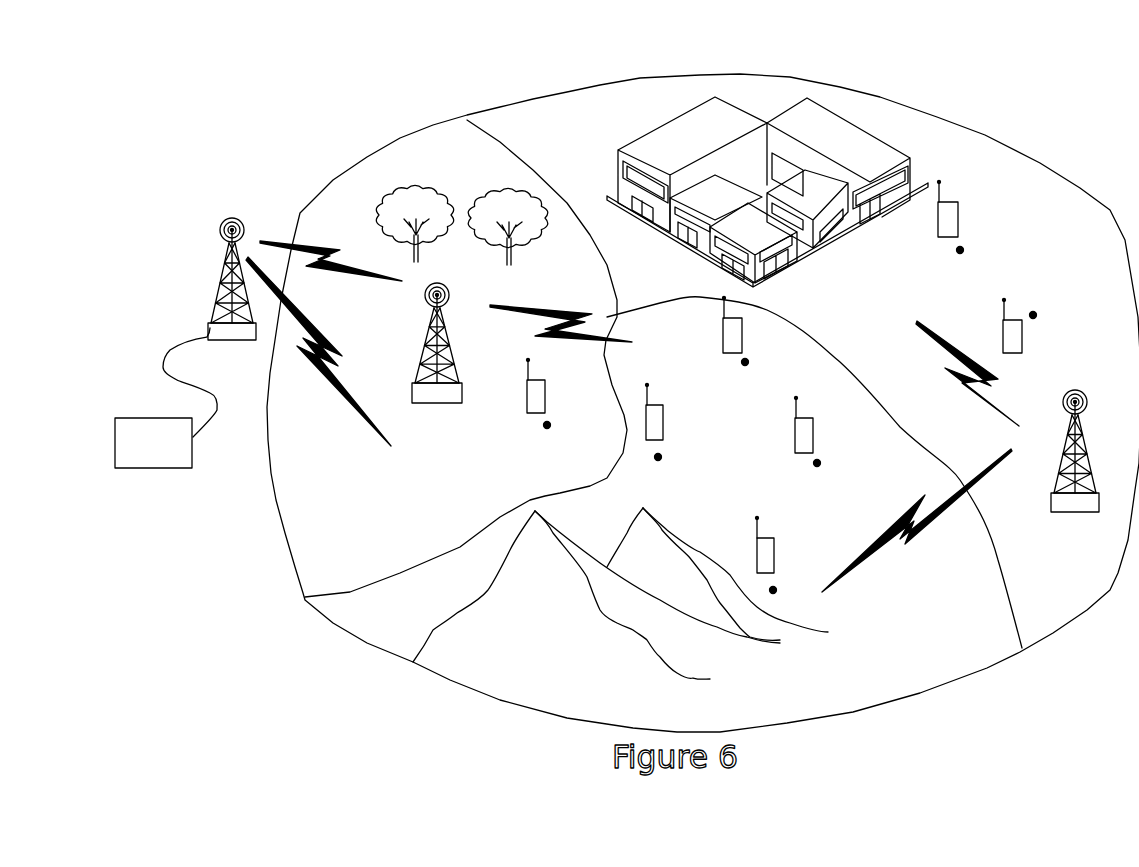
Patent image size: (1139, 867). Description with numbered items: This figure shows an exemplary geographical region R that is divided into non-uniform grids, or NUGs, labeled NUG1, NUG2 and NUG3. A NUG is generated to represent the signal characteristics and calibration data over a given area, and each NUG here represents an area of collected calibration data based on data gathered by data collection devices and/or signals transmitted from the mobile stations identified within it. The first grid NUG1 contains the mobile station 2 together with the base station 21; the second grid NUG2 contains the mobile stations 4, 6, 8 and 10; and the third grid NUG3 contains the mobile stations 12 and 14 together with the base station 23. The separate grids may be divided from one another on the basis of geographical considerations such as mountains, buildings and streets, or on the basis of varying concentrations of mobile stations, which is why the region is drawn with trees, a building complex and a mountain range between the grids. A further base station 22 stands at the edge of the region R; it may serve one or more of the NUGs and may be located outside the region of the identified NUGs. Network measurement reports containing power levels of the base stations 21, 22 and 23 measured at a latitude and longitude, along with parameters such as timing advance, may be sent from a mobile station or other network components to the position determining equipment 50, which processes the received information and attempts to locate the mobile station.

The mobile station 2 is at (548, 403).
The mobile station 4 is at (745, 340).
The mobile station 6 is at (664, 432).
The mobile station 8 is at (776, 564).
The mobile station 10 is at (822, 442).
The mobile station 12 is at (965, 227).
The mobile station 14 is at (1034, 326).
The base station 21 is at (437, 356).
The base station 22 is at (232, 291).
The base station 23 is at (1075, 465).
The position determining equipment 50 is at (166, 414).
The geographical region R is at (487, 93).
The non-uniform grid NUG1 is at (303, 545).
The non-uniform grid NUG2 is at (920, 675).
The non-uniform grid NUG3 is at (1023, 175).